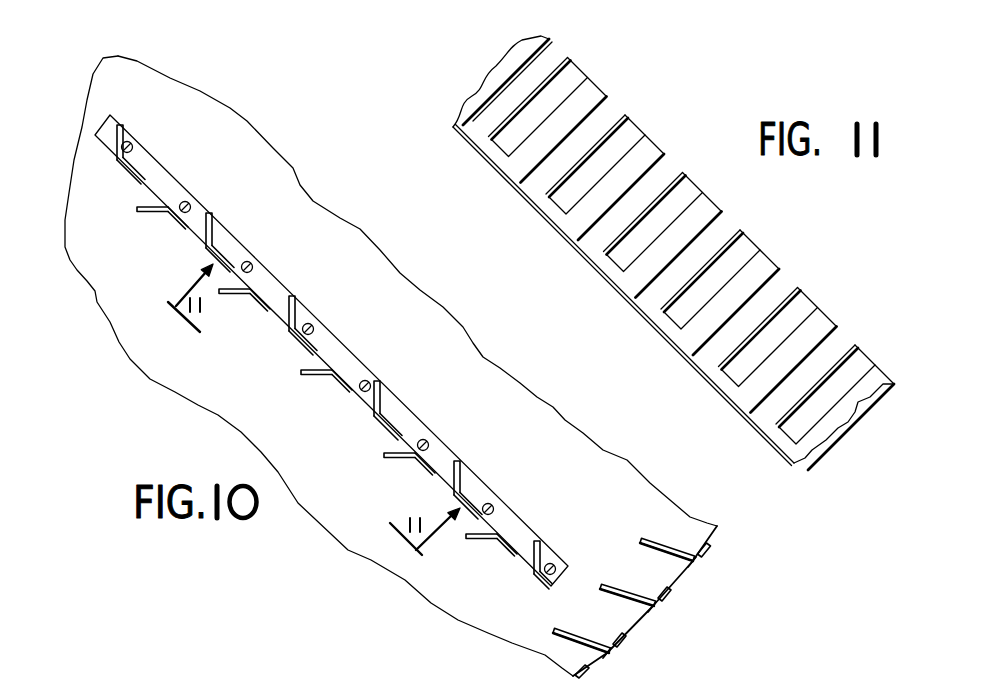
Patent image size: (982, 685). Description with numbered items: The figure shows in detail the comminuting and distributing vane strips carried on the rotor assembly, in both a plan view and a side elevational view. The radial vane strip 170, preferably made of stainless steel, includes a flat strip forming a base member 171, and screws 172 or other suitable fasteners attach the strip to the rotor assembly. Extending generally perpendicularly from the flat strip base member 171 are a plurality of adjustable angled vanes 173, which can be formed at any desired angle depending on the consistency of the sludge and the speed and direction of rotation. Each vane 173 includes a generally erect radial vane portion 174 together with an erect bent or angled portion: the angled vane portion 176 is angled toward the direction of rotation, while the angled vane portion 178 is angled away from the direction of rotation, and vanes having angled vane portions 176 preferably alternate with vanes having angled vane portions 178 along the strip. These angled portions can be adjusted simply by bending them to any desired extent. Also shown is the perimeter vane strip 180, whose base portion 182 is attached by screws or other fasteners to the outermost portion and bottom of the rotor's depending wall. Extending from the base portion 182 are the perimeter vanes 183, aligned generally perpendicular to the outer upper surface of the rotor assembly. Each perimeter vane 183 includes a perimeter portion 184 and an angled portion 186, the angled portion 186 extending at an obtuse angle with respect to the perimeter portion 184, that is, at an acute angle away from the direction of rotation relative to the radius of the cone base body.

In FIG. 10, the radial vane strip 170 is at (280, 337).
In FIG. 11, the radial vane strip 170 is at (609, 280).
In FIG. 10, the base member 171 is at (148, 168).
In FIG. 11, the base member 171 is at (547, 217).
In FIG. 10, the screws 172 is at (251, 265).
In FIG. 10, the adjustable angled vane 173 is at (333, 369).
In FIG. 11, the adjustable angled vane 173 is at (656, 136).
In FIG. 10, the radial vane portion 174 is at (343, 388).
In FIG. 11, the radial vane portion 174 is at (634, 163).
In FIG. 10, the angled vane portion 176 is at (210, 232).
In FIG. 11, the angled vane portion 176 is at (623, 130).
In FIG. 10, the angled vane portion 178 is at (317, 380).
In FIG. 11, the angled vane portion 178 is at (668, 212).
In FIG. 10, the perimeter vane strip 180 is at (691, 610).
In FIG. 10, the base portion 182 is at (686, 576).
In FIG. 10, the perimeter vane 183 is at (695, 563).
In FIG. 10, the perimeter portion 184 is at (706, 545).
In FIG. 10, the angled portion 186 is at (653, 541).